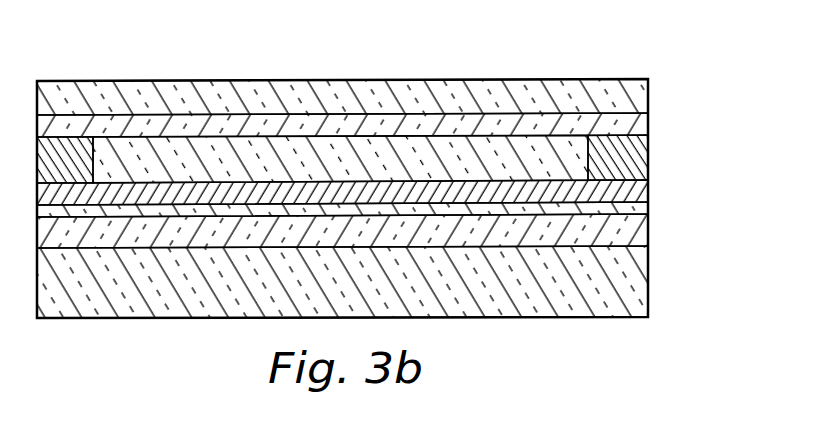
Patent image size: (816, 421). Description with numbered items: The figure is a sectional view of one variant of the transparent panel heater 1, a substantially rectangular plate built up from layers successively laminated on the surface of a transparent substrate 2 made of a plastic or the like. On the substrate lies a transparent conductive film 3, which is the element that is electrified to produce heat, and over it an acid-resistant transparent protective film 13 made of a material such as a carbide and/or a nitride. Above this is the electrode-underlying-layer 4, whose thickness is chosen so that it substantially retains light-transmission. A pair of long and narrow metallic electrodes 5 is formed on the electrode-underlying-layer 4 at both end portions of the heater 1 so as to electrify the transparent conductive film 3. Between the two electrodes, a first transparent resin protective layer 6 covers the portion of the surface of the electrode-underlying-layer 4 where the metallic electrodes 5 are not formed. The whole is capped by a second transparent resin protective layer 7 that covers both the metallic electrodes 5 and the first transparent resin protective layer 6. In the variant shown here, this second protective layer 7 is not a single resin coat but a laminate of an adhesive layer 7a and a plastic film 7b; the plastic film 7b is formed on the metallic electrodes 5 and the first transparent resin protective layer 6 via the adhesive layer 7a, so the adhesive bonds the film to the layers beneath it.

The transparent panel heater 1 is at (386, 159).
The transparent substrate 2 is at (638, 286).
The transparent conductive film 3 is at (638, 239).
The acid-resistant transparent protective film 13 is at (639, 210).
The electrode-underlying-layer 4 is at (638, 191).
The metallic electrodes 5 is at (649, 157).
The first transparent resin protective layer 6 is at (338, 153).
The second transparent resin protective layer 7 is at (386, 99).
The adhesive layer 7a is at (367, 122).
The plastic film 7b is at (649, 90).